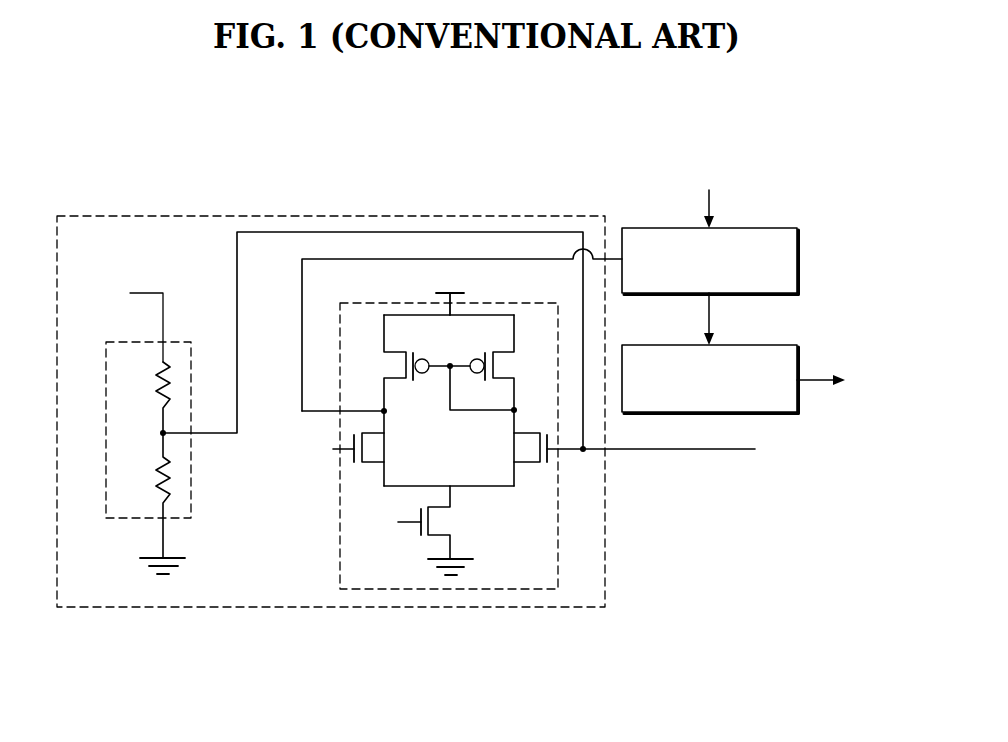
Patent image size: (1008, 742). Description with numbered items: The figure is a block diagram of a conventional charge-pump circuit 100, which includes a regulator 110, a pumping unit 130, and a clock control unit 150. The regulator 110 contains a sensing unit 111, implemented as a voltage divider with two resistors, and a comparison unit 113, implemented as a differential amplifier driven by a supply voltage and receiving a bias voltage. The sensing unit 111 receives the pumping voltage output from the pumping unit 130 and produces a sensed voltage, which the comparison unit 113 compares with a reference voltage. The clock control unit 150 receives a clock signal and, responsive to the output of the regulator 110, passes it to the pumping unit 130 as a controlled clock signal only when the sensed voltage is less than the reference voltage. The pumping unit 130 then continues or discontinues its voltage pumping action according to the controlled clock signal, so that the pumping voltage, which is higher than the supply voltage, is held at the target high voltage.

The charge-pump circuit 100 is at (790, 149).
The regulator 110 is at (359, 216).
The sensing unit 111 is at (191, 468).
The comparison unit 113 is at (340, 541).
The clock control unit 150 is at (797, 240).
The pumping unit 130 is at (797, 397).